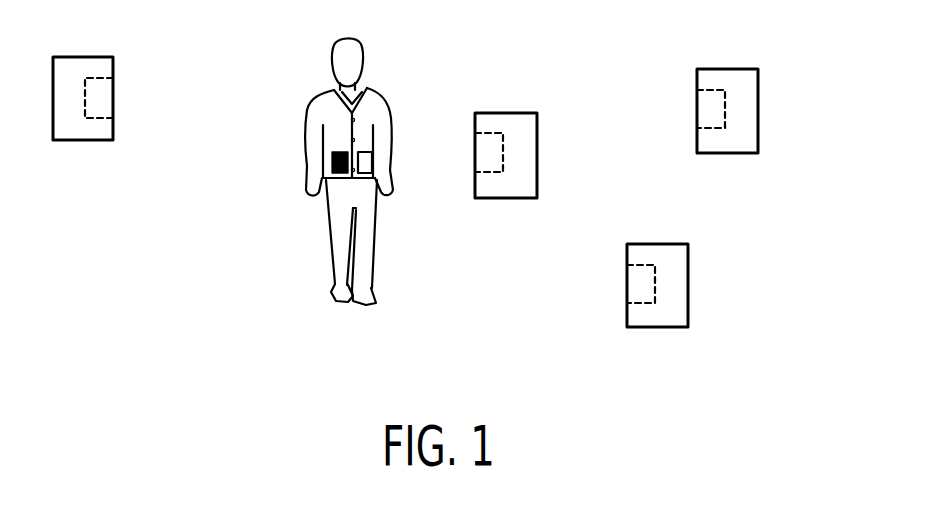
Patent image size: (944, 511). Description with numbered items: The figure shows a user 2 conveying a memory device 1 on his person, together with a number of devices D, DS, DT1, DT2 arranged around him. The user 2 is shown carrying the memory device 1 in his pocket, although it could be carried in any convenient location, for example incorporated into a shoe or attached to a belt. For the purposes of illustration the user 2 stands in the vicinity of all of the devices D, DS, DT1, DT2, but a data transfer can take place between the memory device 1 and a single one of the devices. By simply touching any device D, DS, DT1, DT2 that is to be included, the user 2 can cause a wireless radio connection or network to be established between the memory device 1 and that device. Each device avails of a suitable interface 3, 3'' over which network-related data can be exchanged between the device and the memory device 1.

The memory device 1 is at (331, 173).
The user 2 is at (362, 50).
The interface 3 is at (464, 169).
The interface 3'' is at (608, 301).
The device DT2 is at (113, 65).
The device DS is at (537, 147).
The device DT1 is at (758, 101).
The device D is at (688, 278).